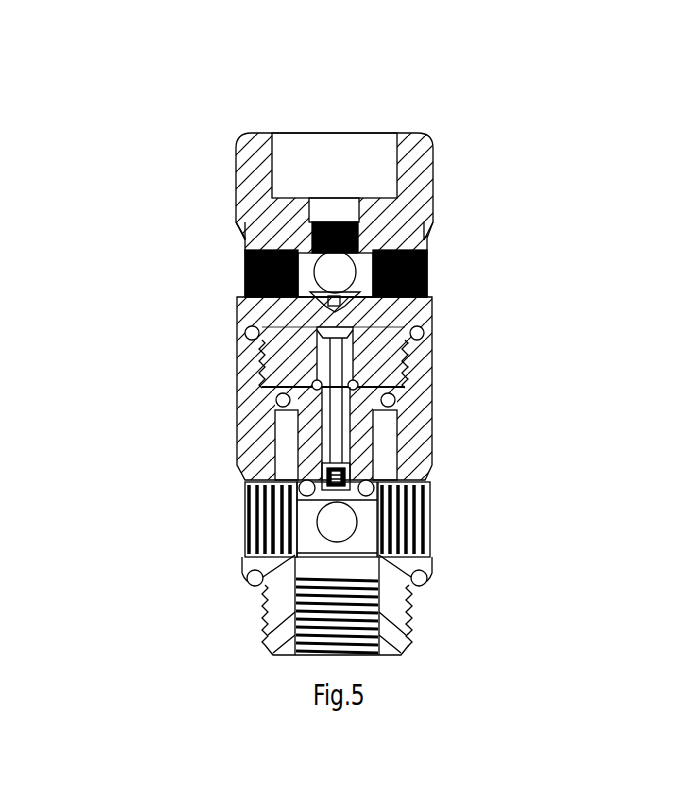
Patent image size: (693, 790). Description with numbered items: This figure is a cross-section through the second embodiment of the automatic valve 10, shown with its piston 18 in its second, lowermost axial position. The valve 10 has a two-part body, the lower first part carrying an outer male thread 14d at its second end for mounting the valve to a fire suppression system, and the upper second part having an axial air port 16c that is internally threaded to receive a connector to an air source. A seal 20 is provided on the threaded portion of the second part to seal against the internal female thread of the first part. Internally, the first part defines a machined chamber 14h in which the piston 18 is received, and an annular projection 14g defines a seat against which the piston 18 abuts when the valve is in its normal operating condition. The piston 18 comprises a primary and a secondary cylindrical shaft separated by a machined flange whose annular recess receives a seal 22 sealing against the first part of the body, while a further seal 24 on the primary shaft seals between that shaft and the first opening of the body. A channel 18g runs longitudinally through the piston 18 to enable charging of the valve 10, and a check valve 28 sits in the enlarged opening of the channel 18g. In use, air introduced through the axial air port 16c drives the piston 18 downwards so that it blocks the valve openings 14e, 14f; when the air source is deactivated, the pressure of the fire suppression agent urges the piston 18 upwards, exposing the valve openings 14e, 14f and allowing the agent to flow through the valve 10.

The automatic valve 10 is at (452, 245).
The axial air port 16c is at (337, 208).
The channel 18g is at (338, 356).
The seal 20 is at (430, 332).
The seal 22 is at (445, 399).
The piston 18 is at (363, 441).
The machined chamber 14h is at (287, 427).
The annular projection 14g is at (430, 470).
The check valve 28 is at (317, 480).
The further opening 14f is at (247, 517).
The valve opening 14e is at (430, 527).
The further seal 24 is at (430, 488).
The outer male thread 14d is at (378, 620).